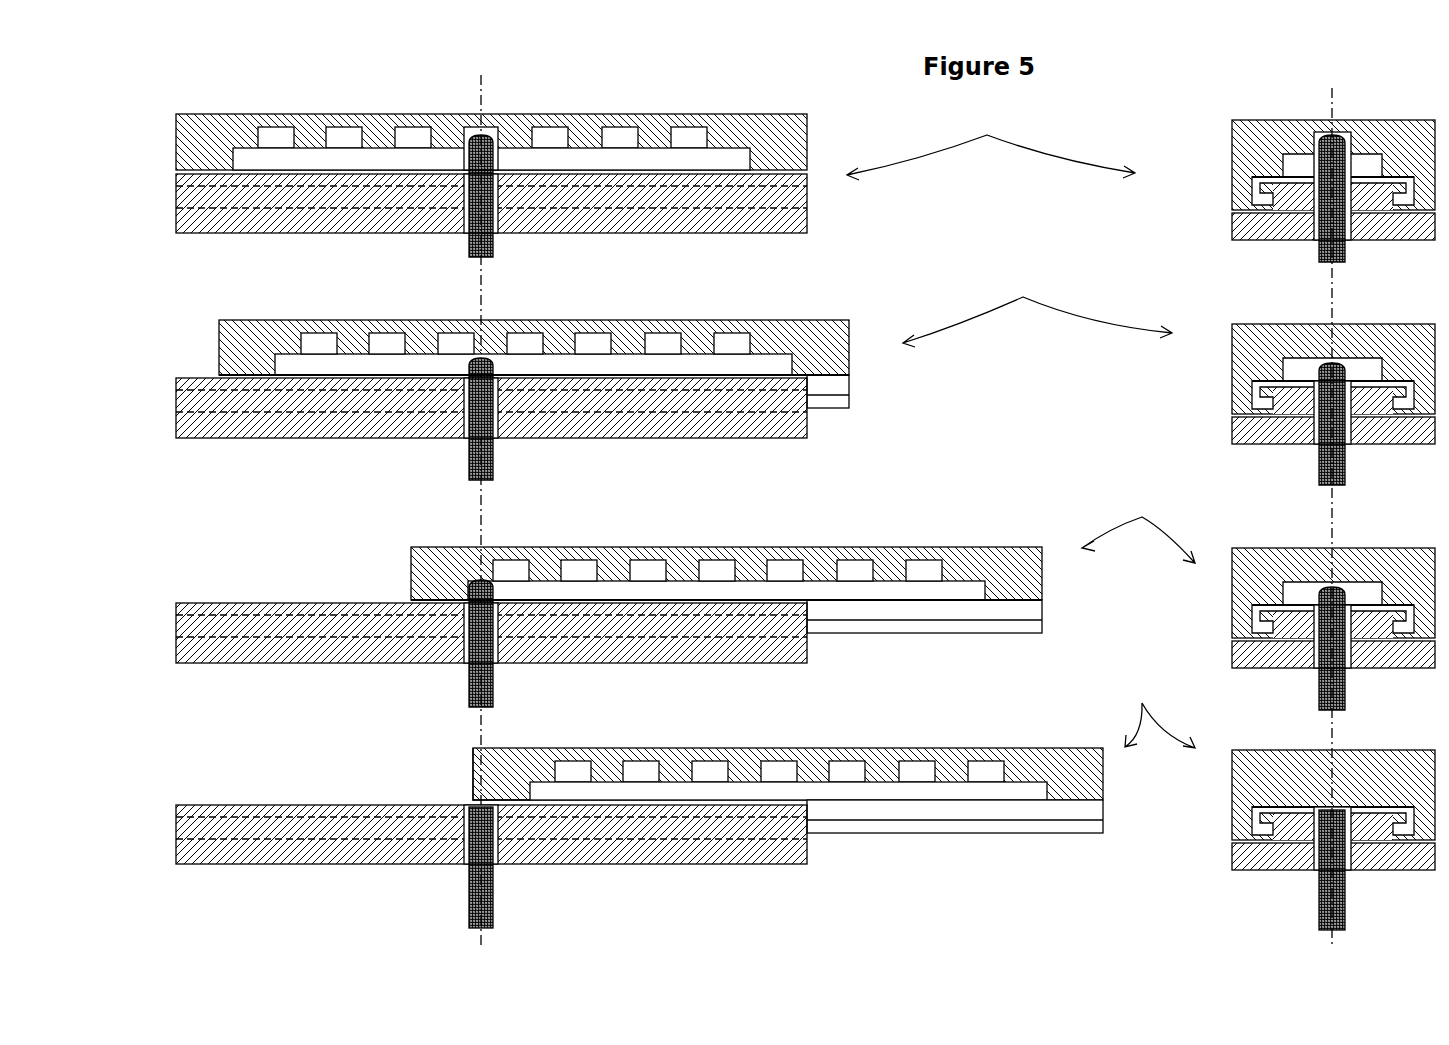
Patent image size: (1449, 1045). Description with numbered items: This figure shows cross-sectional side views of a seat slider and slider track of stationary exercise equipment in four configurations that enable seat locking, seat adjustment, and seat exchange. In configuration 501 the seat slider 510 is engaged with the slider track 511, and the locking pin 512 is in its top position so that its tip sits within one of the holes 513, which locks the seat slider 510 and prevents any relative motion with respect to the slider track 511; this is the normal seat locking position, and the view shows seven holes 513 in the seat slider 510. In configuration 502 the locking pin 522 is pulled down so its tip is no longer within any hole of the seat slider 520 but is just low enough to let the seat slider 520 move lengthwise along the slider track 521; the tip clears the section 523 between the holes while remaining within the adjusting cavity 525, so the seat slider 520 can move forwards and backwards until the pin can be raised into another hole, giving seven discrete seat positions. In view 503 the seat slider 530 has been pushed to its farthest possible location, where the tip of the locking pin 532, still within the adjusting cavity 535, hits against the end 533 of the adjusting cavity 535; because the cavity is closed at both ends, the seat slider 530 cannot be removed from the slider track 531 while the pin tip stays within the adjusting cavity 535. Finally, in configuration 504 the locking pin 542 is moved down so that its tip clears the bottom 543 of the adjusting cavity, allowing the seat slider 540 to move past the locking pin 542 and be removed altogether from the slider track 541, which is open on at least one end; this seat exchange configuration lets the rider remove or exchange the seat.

The seat locking configuration 501 is at (991, 142).
The adjusting configuration 502 is at (1037, 307).
The adjusting configuration at farthest position 503 is at (1138, 524).
The seat exchange configuration 504 is at (1158, 710).
The seat slider 510 is at (177, 118).
The slider track 511 is at (177, 208).
The locking pin 512 is at (490, 150).
The holes 513 is at (453, 120).
The seat slider 520 is at (228, 345).
The slider track 521 is at (212, 427).
The locking pin 522 is at (488, 362).
The section between the holes 523 is at (418, 340).
The adjusting cavity 525 is at (578, 365).
The seat slider 530 is at (422, 580).
The slider track 531 is at (270, 618).
The locking pin 532 is at (493, 588).
The end of the adjusting cavity 533 is at (450, 560).
The adjusting cavity 535 is at (667, 588).
The seat slider 540 is at (490, 780).
The slider track 541 is at (292, 810).
The locking pin 542 is at (488, 870).
The bottom of the adjusting cavity 543 is at (472, 797).